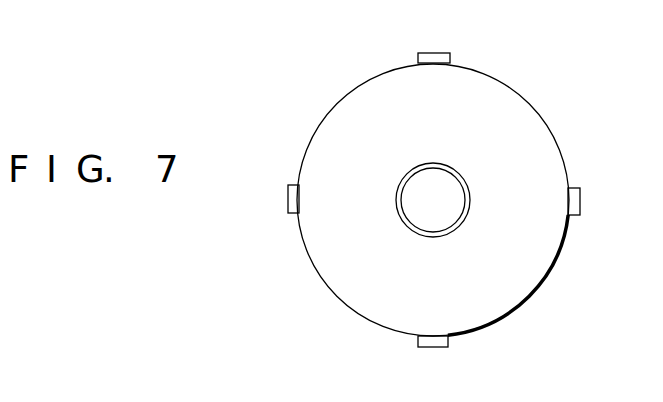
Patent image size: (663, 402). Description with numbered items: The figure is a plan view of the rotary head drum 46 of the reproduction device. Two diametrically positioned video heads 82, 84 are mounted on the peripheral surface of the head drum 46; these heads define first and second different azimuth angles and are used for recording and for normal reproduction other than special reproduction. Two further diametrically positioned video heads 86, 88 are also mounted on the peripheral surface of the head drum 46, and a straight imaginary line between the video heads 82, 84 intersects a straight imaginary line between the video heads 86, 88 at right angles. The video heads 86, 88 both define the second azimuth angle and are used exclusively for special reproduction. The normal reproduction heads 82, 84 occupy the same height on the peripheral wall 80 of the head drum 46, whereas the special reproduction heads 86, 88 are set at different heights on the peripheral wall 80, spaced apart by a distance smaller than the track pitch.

The peripheral wall 80 is at (536, 109).
The video head 82 is at (434, 53).
The video head 84 is at (434, 348).
The video head 86 is at (581, 200).
The video head 88 is at (288, 197).
The head drum 46 is at (535, 282).